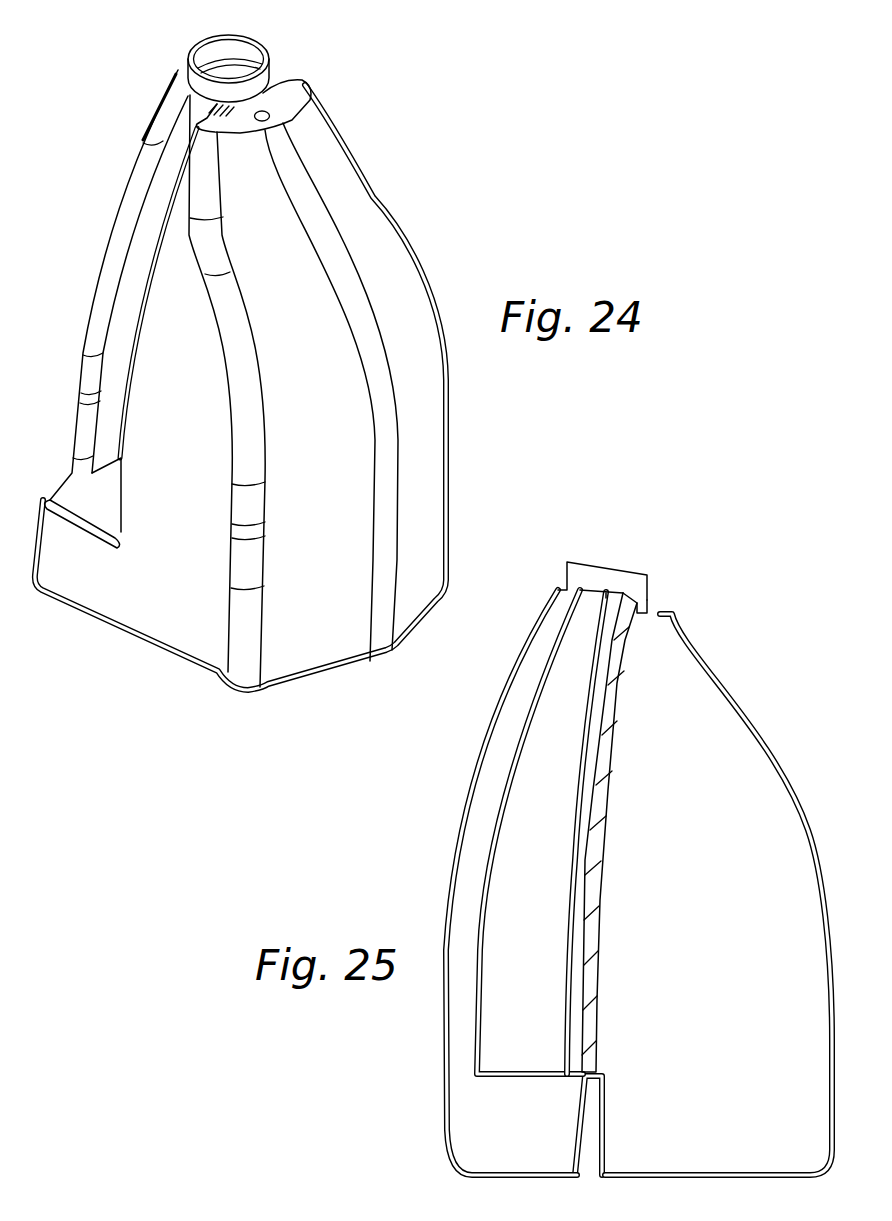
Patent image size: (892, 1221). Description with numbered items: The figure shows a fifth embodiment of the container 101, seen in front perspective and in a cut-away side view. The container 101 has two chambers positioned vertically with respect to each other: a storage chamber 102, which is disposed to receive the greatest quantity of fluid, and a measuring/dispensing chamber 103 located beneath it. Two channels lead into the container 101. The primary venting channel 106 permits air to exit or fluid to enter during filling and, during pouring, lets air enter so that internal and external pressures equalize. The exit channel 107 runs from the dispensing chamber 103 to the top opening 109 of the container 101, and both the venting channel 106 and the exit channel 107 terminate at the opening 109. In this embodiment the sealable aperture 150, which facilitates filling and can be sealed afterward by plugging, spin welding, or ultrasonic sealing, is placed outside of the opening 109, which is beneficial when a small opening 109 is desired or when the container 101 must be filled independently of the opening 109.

In FIG. 24, the container 101 is at (432, 214).
In FIG. 25, the container 101 is at (588, 843).
In FIG. 25, the storage chamber 102 is at (688, 694).
In FIG. 25, the measuring/dispensing chamber 103 is at (513, 1118).
In FIG. 25, the primary venting channel 106 is at (488, 812).
In FIG. 25, the exit channel 107 is at (592, 790).
In FIG. 24, the top opening 109 is at (223, 44).
In FIG. 25, the top opening 109 is at (595, 562).
In FIG. 24, the sealable aperture 150 is at (277, 98).
In FIG. 25, the sealable aperture 150 is at (658, 613).